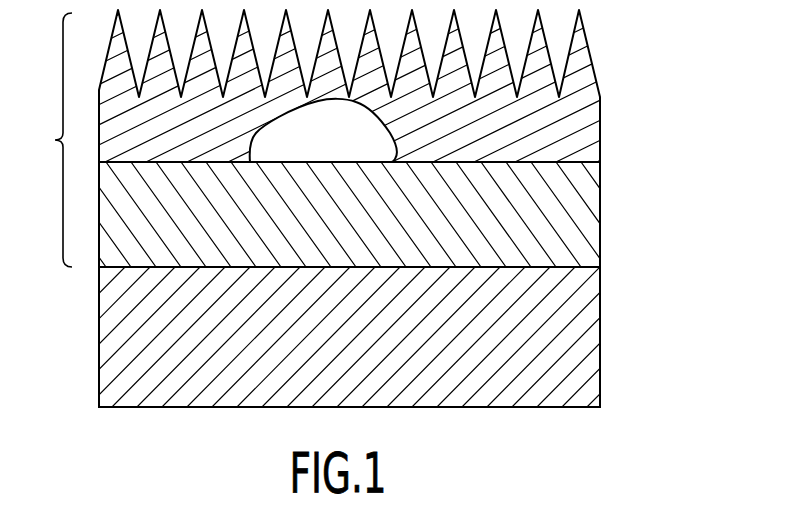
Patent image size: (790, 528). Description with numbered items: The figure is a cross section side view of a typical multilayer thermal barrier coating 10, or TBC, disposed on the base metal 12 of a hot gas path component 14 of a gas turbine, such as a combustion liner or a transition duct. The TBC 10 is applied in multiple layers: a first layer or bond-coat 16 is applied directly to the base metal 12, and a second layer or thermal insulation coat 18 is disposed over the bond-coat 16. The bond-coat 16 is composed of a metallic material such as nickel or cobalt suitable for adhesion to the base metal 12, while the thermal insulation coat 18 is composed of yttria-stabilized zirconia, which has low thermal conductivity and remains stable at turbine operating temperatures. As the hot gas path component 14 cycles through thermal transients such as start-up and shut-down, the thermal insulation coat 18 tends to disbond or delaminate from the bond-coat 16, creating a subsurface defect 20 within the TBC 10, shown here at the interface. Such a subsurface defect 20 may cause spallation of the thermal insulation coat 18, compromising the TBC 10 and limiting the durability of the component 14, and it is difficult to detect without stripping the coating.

The thermal barrier coating 10 is at (395, 138).
The base metal 12 is at (362, 337).
The hot gas path component 14 is at (609, 343).
The bond-coat 16 is at (609, 205).
The thermal insulation coat 18 is at (609, 131).
The subsurface defect 20 is at (338, 149).